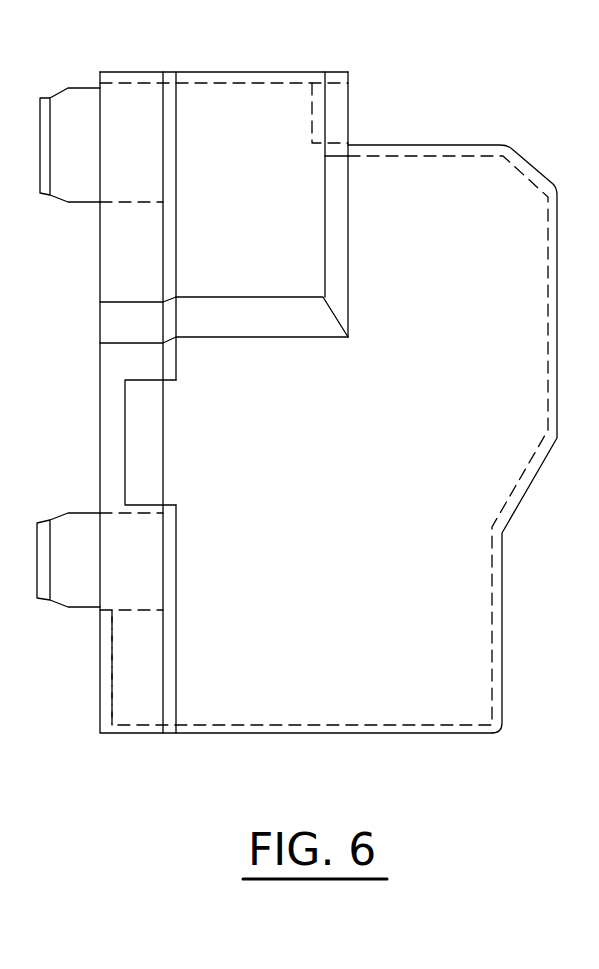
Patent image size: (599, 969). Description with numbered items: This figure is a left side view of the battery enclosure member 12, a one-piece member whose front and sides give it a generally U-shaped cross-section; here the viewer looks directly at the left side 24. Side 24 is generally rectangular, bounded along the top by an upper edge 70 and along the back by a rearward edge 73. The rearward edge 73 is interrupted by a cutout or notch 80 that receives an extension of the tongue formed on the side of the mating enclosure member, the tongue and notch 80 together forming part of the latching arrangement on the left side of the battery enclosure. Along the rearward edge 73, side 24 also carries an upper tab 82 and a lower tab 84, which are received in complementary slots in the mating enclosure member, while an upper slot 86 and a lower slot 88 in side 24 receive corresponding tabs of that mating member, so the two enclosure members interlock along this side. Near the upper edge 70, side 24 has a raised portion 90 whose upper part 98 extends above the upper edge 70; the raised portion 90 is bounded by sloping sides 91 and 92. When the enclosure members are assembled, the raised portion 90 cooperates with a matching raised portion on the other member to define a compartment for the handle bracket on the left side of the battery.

The enclosure member 12 is at (367, 779).
The side 24 is at (357, 519).
The upper edge 70 is at (452, 145).
The rearward edge 73 is at (130, 100).
The notch 80 is at (142, 455).
The upper tab 82 is at (68, 88).
The lower tab 84 is at (83, 527).
The upper slot 86 is at (127, 268).
The lower slot 88 is at (100, 678).
The raised portion 90 is at (283, 208).
The sloping side 91 is at (337, 268).
The sloping side 92 is at (286, 330).
The upper part 98 is at (198, 72).